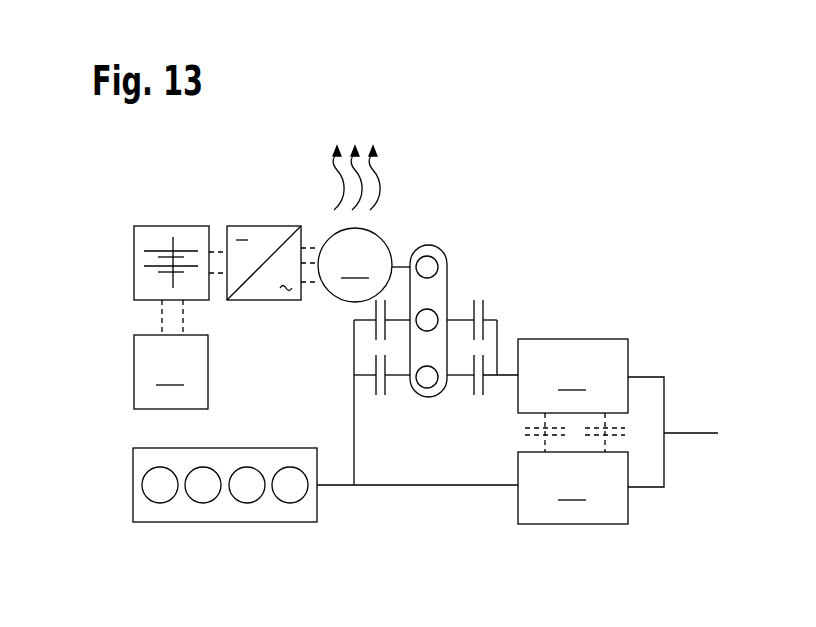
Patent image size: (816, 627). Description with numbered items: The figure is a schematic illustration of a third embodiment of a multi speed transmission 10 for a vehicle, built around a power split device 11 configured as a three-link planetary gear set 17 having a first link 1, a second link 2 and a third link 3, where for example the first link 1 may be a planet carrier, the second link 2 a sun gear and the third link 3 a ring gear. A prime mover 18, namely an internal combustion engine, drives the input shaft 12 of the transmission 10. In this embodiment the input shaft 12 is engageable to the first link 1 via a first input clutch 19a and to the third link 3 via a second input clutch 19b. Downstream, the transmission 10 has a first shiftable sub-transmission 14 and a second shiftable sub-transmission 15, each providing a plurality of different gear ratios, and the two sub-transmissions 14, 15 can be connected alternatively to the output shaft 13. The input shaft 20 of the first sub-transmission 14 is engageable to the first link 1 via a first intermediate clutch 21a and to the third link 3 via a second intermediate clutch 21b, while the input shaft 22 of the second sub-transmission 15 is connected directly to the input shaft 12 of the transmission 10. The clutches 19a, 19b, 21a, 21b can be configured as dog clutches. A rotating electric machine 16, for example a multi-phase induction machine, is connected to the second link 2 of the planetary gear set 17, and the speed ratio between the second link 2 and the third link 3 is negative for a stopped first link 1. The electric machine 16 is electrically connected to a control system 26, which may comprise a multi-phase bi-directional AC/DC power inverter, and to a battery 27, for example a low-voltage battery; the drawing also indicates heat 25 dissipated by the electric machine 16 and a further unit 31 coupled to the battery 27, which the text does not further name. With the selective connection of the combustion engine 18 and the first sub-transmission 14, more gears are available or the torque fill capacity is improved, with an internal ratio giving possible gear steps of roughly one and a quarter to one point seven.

The multi speed transmission 10 is at (577, 247).
The power split device 11 is at (454, 307).
The first link 1 is at (437, 329).
The second link 2 is at (425, 255).
The third link 3 is at (422, 386).
The input shaft 12 is at (330, 488).
The output shaft 13 is at (692, 432).
The first shiftable sub-transmission 14 is at (573, 376).
The second shiftable sub-transmission 15 is at (573, 488).
The rotating electric machine 16 is at (355, 265).
The three-link planetary gear set 17 is at (449, 278).
The prime mover 18 is at (143, 513).
The first input clutch 19a is at (373, 327).
The second input clutch 19b is at (373, 380).
The input shaft of the first sub-transmission 20 is at (507, 385).
The first intermediate clutch 21a is at (487, 305).
The second intermediate clutch 21b is at (470, 392).
The input shaft of the second sub-transmission 22 is at (462, 488).
The waste heat 25 is at (337, 190).
The control system 26 is at (265, 226).
The battery 27 is at (172, 226).
The control unit 31 is at (171, 372).